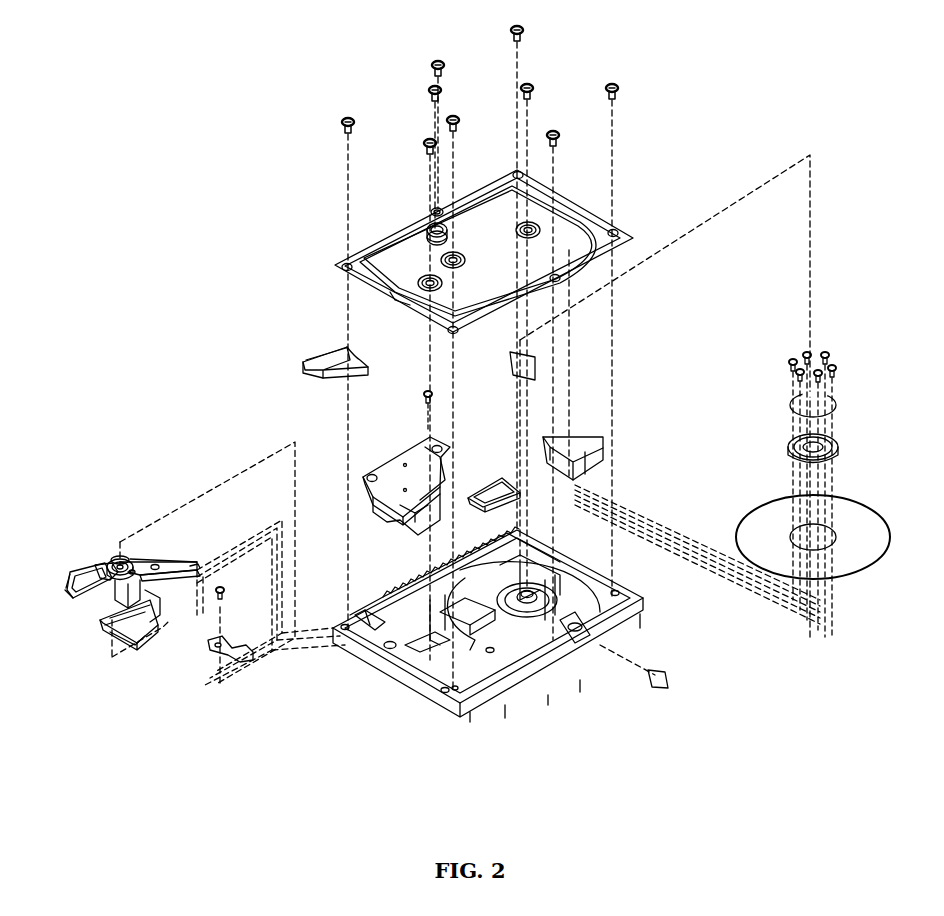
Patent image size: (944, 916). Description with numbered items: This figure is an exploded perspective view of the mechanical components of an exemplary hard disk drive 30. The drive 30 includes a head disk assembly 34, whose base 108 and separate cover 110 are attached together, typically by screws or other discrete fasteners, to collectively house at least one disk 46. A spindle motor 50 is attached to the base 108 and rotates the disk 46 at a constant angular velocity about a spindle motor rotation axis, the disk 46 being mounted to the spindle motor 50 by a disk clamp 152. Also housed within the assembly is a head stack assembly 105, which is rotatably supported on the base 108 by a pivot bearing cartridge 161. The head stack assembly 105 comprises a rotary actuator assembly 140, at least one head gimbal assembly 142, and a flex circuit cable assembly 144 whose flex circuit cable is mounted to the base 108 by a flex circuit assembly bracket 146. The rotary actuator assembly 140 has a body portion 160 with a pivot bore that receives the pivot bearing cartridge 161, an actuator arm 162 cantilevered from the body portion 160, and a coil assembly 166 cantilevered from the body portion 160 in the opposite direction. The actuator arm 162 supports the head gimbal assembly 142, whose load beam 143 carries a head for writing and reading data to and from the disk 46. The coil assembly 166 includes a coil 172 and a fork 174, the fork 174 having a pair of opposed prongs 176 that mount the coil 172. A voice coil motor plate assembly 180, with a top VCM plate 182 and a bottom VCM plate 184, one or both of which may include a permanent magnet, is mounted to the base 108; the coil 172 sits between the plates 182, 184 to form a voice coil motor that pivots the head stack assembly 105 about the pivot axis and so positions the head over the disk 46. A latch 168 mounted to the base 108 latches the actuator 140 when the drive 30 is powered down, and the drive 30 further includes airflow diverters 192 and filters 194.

The hard disk drive 30 is at (280, 97).
The head disk assembly 34 is at (666, 176).
The cover 110 is at (430, 224).
The airflow diverter 192 is at (332, 358).
The filter 194 is at (513, 373).
The voice coil motor plate assembly 180 is at (415, 458).
The top VCM plate 182 is at (392, 480).
The bottom VCM plate 184 is at (393, 503).
The head stack assembly 105 is at (113, 465).
The body portion 160 is at (110, 560).
The pivot bearing cartridge 161 is at (125, 557).
The coil assembly 166 is at (85, 570).
The prongs 176 is at (73, 567).
The coil 172 is at (78, 595).
The head gimbal assembly 142 is at (188, 563).
The load beam 143 is at (218, 567).
The actuator arm 162 is at (137, 570).
The fork 174 is at (110, 597).
The rotary actuator assembly 140 is at (83, 590).
The flex circuit cable assembly 144 is at (157, 590).
The flex circuit assembly bracket 146 is at (137, 643).
The latch 168 is at (227, 640).
The base 108 is at (392, 680).
The spindle motor 50 is at (600, 645).
The disk clamp 152 is at (788, 440).
The disk 46 is at (843, 578).